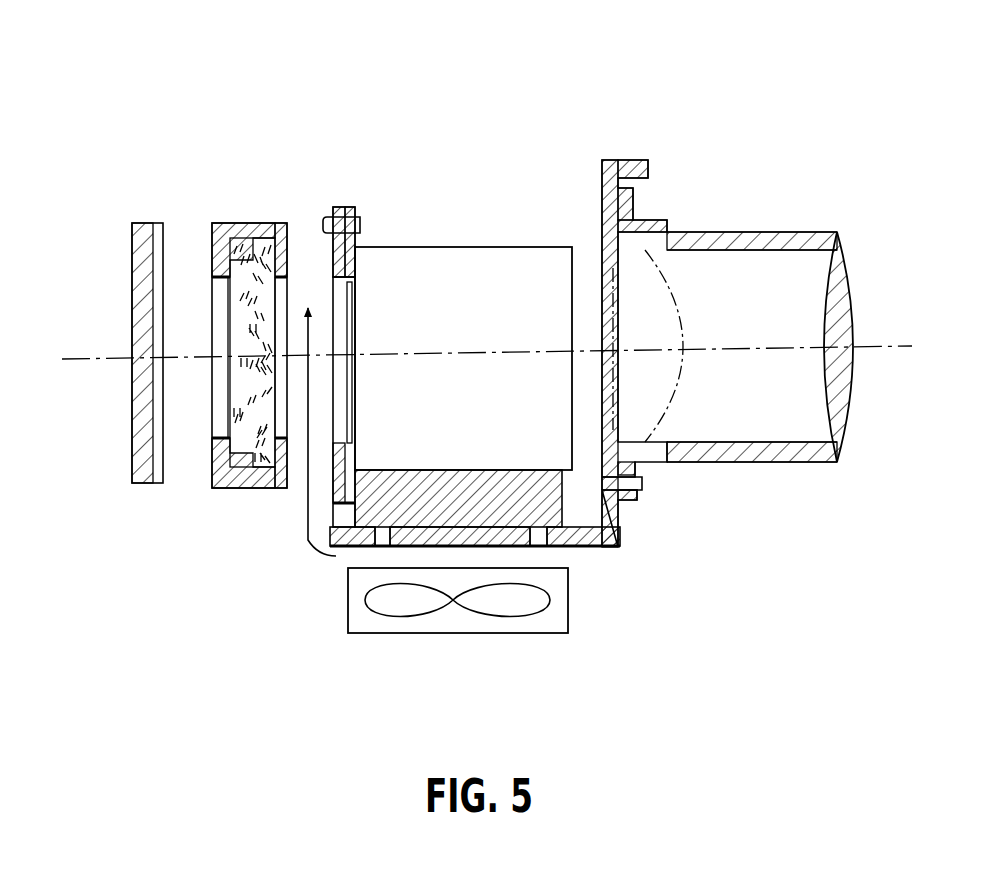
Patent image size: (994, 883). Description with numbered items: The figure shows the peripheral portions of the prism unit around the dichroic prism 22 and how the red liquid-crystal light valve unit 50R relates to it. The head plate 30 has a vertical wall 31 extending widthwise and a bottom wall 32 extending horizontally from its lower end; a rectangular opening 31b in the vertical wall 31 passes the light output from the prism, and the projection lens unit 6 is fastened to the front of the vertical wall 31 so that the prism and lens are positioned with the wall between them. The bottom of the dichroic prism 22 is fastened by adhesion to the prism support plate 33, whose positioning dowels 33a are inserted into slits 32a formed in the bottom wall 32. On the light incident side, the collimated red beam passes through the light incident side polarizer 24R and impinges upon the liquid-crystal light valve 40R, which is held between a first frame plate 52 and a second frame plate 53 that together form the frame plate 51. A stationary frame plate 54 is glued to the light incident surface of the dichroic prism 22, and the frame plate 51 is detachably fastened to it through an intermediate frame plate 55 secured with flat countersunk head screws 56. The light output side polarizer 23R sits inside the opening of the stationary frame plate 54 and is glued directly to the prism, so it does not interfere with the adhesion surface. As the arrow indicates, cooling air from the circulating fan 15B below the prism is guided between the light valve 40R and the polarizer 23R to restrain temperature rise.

The liquid-crystal light valve unit 50R is at (437, 82).
The light incident side polarizer 24R is at (145, 450).
The liquid-crystal light valve 40R is at (236, 300).
The frame plate 51 is at (277, 144).
The first frame plate 52 is at (240, 237).
The second frame plate 53 is at (283, 236).
The intermediate frame plate 55 is at (340, 207).
The stationary frame plate 54 is at (352, 209).
The flat countersunk head screw 56 is at (362, 228).
The light output side polarizer 23R is at (350, 422).
The prism support plate 33 is at (333, 540).
The positioning dowel 33a is at (378, 546).
The dichroic prism 22 is at (477, 347).
The bottom wall 32 is at (616, 538).
The slit 32a is at (452, 557).
The circulating fan 15B is at (450, 628).
The head plate 30 is at (634, 138).
The vertical wall 31 is at (603, 186).
The rectangular opening 31b is at (606, 266).
The projection lens unit 6 is at (748, 203).